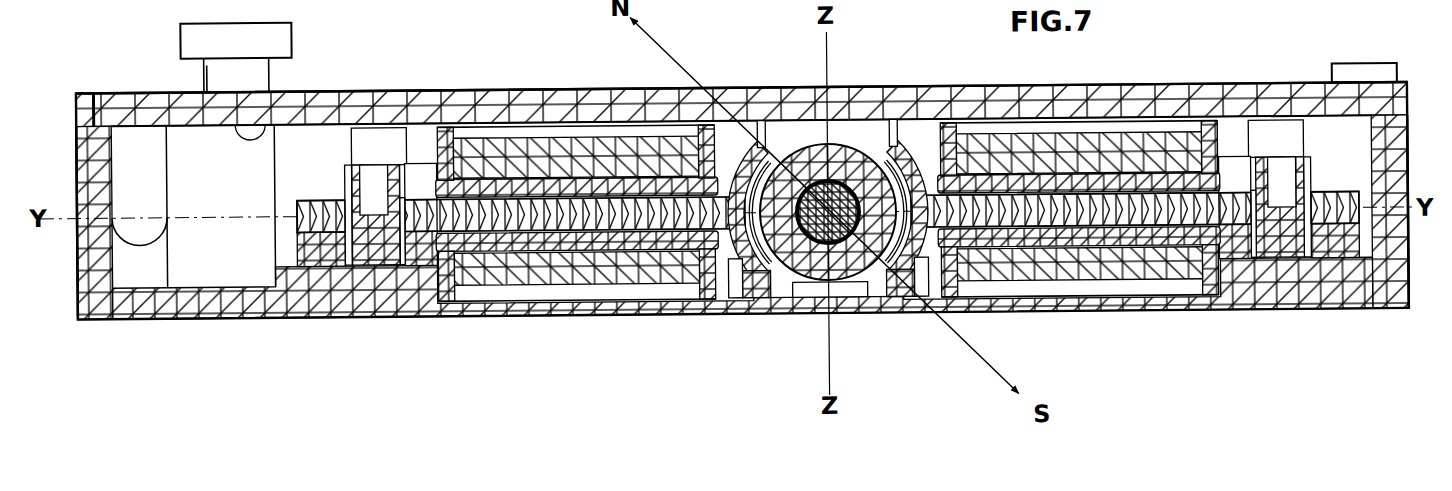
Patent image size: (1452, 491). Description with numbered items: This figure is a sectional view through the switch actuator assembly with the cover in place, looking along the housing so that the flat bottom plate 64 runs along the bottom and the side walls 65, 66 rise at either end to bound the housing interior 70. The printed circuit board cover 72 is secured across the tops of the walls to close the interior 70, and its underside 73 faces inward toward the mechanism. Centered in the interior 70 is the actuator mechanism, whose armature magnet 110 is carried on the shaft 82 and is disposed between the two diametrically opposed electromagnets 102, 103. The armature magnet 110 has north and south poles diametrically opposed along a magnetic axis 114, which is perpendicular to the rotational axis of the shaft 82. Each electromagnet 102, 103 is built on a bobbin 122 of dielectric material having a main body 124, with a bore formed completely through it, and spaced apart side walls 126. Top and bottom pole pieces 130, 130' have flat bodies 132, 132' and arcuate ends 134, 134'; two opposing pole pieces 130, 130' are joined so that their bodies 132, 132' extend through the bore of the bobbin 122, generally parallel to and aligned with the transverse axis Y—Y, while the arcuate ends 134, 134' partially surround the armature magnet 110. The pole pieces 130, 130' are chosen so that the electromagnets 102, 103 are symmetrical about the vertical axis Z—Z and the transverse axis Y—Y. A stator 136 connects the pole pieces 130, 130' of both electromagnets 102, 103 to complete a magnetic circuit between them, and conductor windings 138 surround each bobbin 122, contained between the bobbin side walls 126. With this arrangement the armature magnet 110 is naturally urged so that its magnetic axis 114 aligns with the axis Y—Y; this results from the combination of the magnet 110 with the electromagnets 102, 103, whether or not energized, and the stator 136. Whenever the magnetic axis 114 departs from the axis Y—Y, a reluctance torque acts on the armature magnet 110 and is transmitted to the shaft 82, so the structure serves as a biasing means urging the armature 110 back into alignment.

The bottom plate 64 is at (221, 300).
The side wall 65 is at (78, 141).
The side wall 66 is at (1404, 126).
The housing interior 70 is at (207, 194).
The printed circuit board cover 72 is at (379, 101).
The underside of the cover 73 is at (262, 127).
The shaft 82 is at (851, 172).
The electromagnet 102 is at (1014, 136).
The electromagnet 103 is at (522, 284).
The armature magnet 110 is at (839, 144).
The magnetic axis 114 is at (950, 323).
The bobbin 122 is at (434, 159).
The main body 124 is at (606, 254).
The bobbin side wall 126 is at (920, 160).
The top pole piece 130 is at (827, 119).
The bottom pole piece 130' is at (817, 313).
The flat body 132 is at (819, 136).
The flat body 132' is at (713, 295).
The arcuate end 134 is at (827, 143).
The arcuate end 134' is at (817, 333).
The stator 136 is at (296, 245).
The conductor windings 138 is at (510, 142).